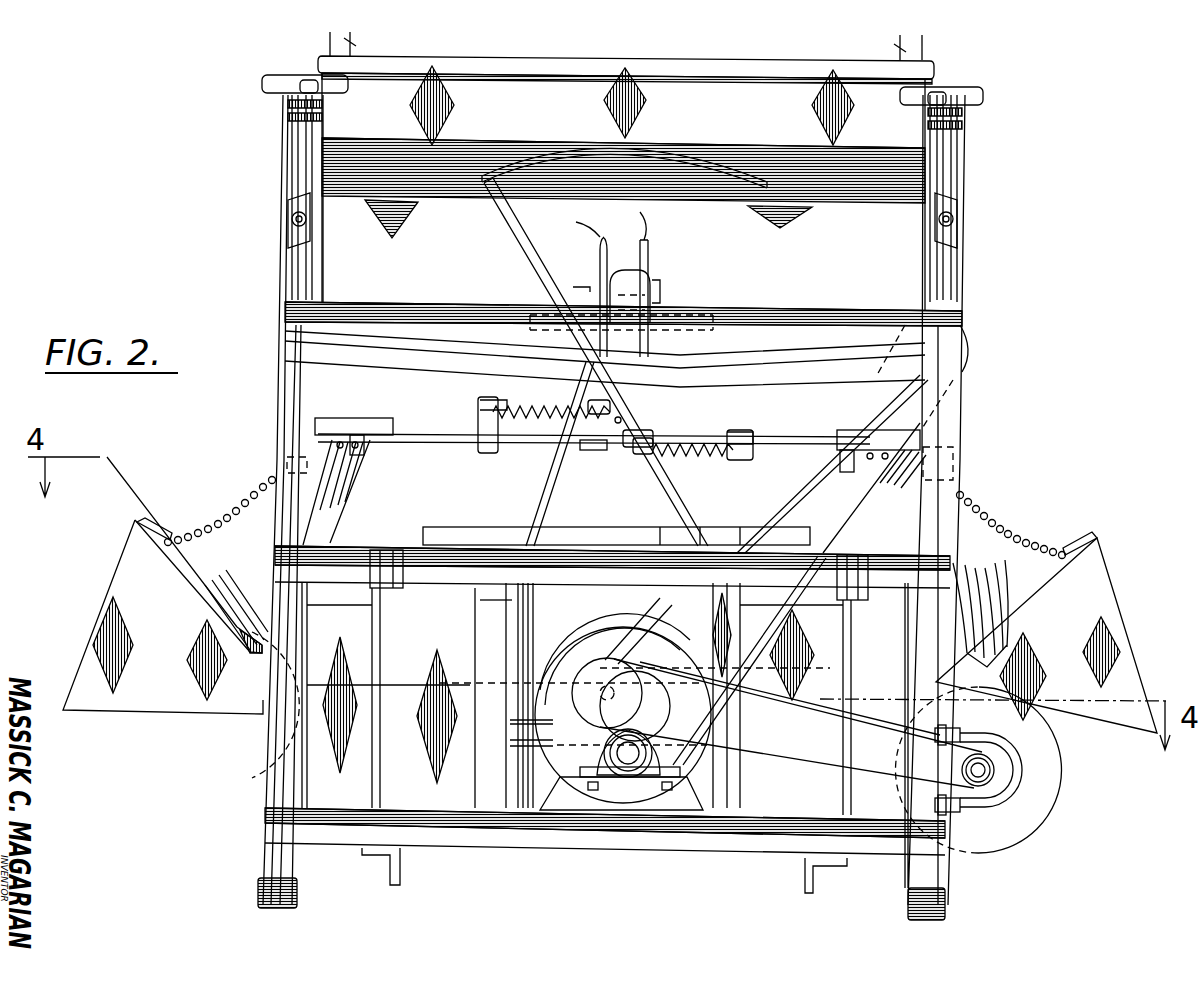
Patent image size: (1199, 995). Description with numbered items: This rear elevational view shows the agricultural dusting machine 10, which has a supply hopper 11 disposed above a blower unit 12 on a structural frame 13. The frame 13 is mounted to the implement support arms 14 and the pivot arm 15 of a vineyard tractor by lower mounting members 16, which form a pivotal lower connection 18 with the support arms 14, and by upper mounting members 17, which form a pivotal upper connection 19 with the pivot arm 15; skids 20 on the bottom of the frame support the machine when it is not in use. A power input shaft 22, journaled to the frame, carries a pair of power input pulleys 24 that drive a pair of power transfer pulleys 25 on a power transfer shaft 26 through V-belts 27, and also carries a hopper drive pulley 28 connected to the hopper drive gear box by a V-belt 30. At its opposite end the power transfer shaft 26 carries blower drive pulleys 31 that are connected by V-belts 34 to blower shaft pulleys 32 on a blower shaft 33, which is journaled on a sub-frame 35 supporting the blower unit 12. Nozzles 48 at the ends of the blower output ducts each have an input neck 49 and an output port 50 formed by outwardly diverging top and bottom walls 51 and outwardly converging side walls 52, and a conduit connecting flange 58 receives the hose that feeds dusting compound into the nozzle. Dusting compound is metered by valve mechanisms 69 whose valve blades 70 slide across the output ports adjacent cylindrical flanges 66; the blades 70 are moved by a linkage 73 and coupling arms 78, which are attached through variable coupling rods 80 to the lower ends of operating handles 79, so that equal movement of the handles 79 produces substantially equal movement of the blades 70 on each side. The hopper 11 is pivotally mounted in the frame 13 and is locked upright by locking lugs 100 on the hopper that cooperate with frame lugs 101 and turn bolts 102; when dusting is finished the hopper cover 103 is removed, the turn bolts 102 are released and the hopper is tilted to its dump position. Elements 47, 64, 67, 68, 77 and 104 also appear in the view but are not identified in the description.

The agricultural dusting machine 10 is at (996, 266).
The supply hopper 11 is at (323, 272).
The blower unit 12 is at (499, 512).
The structural frame 13 is at (962, 428).
The implement support arms 14 is at (403, 560).
The pivot arm 15 is at (648, 277).
The lower mounting members 16 is at (385, 598).
The upper mounting members 17 is at (612, 243).
The pivotal lower connection 18 is at (603, 735).
The pivotal upper connection 19 is at (590, 290).
The skids 20 is at (258, 893).
The power input shaft 22 is at (630, 765).
The power input pulleys 24 is at (612, 660).
The power transfer pulleys 25 is at (1012, 795).
The power transfer shaft 26 is at (990, 770).
The V-belts 27 is at (810, 720).
The hopper drive pulley 28 is at (520, 752).
The V-belt 30 is at (768, 505).
The blower drive pulleys 31 is at (1045, 788).
The blower shaft pulleys 32 is at (570, 650).
The blower shaft 33 is at (520, 686).
The V-belts 34 is at (648, 640).
The sub-frame 35 is at (493, 604).
The leg 47 is at (268, 760).
The nozzles 48 is at (142, 508).
The input neck 49 is at (253, 713).
The output port 50 is at (105, 598).
The top and bottom walls 51 is at (178, 565).
The side walls 52 is at (176, 622).
The conduit connecting flange 58 is at (200, 648).
The chain 64 is at (238, 508).
The cylindrical flanges 66 is at (338, 460).
The hopper panel edge 67 is at (375, 520).
The chute stripes 68 is at (270, 600).
The valve mechanisms 69 is at (436, 385).
The valve blades 70 is at (400, 425).
The linkage 73 is at (540, 442).
The bracket 77 is at (600, 447).
The coupling arms 78 is at (485, 422).
The operating handle 79 is at (496, 192).
The variable coupling rods 80 is at (507, 408).
The locking lugs 100 is at (290, 108).
The frame lugs 101 is at (268, 95).
The turn bolts 102 is at (305, 150).
The hopper cover 103 is at (767, 72).
The top bar 104 is at (352, 42).